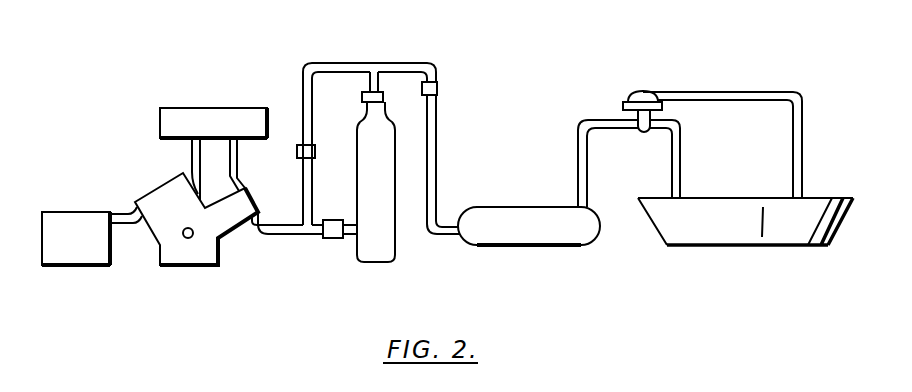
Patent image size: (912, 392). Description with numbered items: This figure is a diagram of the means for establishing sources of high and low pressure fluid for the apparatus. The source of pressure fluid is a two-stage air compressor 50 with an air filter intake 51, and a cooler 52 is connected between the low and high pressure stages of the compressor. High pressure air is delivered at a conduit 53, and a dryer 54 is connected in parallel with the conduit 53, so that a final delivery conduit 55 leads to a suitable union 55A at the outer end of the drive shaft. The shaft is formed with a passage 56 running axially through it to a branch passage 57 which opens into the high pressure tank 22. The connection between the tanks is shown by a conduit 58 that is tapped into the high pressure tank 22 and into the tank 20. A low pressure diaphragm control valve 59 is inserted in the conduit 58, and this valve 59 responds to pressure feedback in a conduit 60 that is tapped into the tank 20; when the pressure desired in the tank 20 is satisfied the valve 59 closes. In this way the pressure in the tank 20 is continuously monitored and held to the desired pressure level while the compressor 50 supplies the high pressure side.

The tank 20 is at (705, 233).
The high pressure tank 22 is at (522, 235).
The two-stage air compressor 50 is at (183, 255).
The air filter intake 51 is at (77, 254).
The cooler 52 is at (197, 115).
The conduit 53 is at (277, 235).
The dryer 54 is at (370, 248).
The final delivery conduit 55 is at (393, 63).
The union 55A is at (438, 89).
The passage 56 is at (438, 152).
The branch passage 57 is at (443, 230).
The conduit 58 is at (575, 162).
The low pressure diaphragm control valve 59 is at (640, 88).
The conduit 60 is at (733, 92).